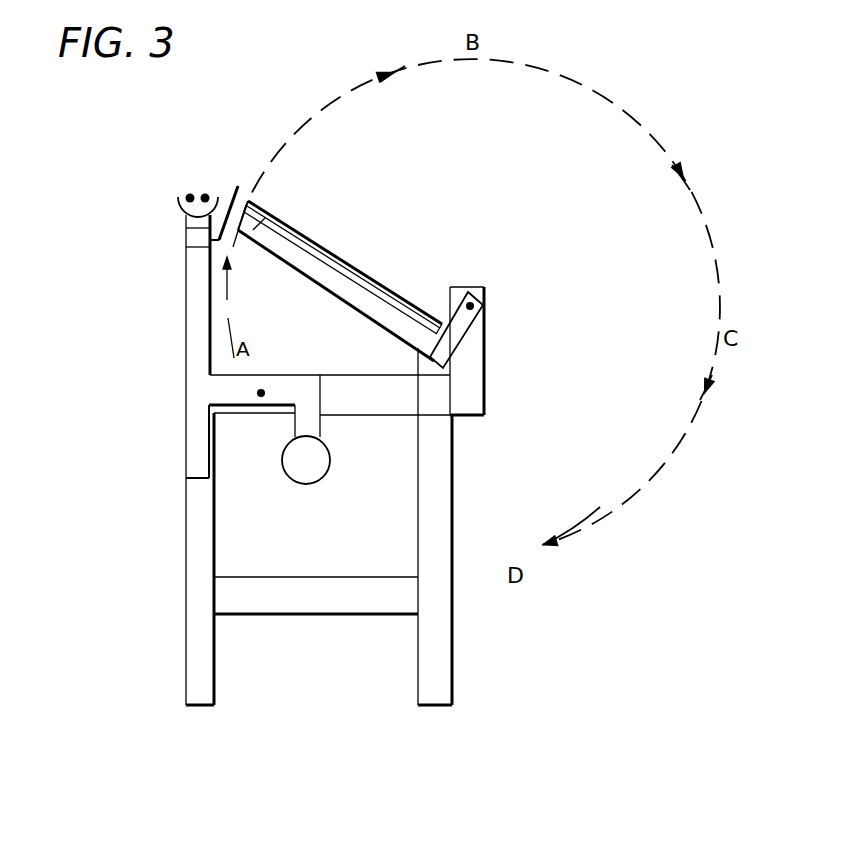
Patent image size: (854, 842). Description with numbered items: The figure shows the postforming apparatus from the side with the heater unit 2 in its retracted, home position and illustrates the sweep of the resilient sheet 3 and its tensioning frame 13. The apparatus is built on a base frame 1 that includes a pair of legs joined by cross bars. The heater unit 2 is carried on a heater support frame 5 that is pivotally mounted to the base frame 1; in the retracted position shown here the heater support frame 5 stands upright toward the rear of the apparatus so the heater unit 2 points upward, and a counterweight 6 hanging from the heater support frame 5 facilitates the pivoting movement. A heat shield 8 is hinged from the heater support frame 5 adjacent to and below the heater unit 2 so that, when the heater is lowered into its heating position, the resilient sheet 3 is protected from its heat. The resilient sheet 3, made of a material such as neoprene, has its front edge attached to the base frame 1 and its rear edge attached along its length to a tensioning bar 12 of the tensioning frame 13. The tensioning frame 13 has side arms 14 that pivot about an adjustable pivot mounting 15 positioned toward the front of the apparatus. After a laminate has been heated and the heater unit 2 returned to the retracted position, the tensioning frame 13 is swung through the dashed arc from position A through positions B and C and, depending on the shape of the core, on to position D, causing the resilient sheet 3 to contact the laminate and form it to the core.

The base frame 1 is at (468, 481).
The heater unit 2 is at (178, 205).
The resilient sheet 3 is at (350, 264).
The heater support frame 5 is at (186, 353).
The counterweight 6 is at (300, 468).
The heat shield 8 is at (237, 187).
The tensioning bar 12 is at (245, 230).
The tensioning frame 13 is at (305, 300).
The side arms 14 is at (373, 318).
The adjustable pivot mounting 15 is at (476, 383).